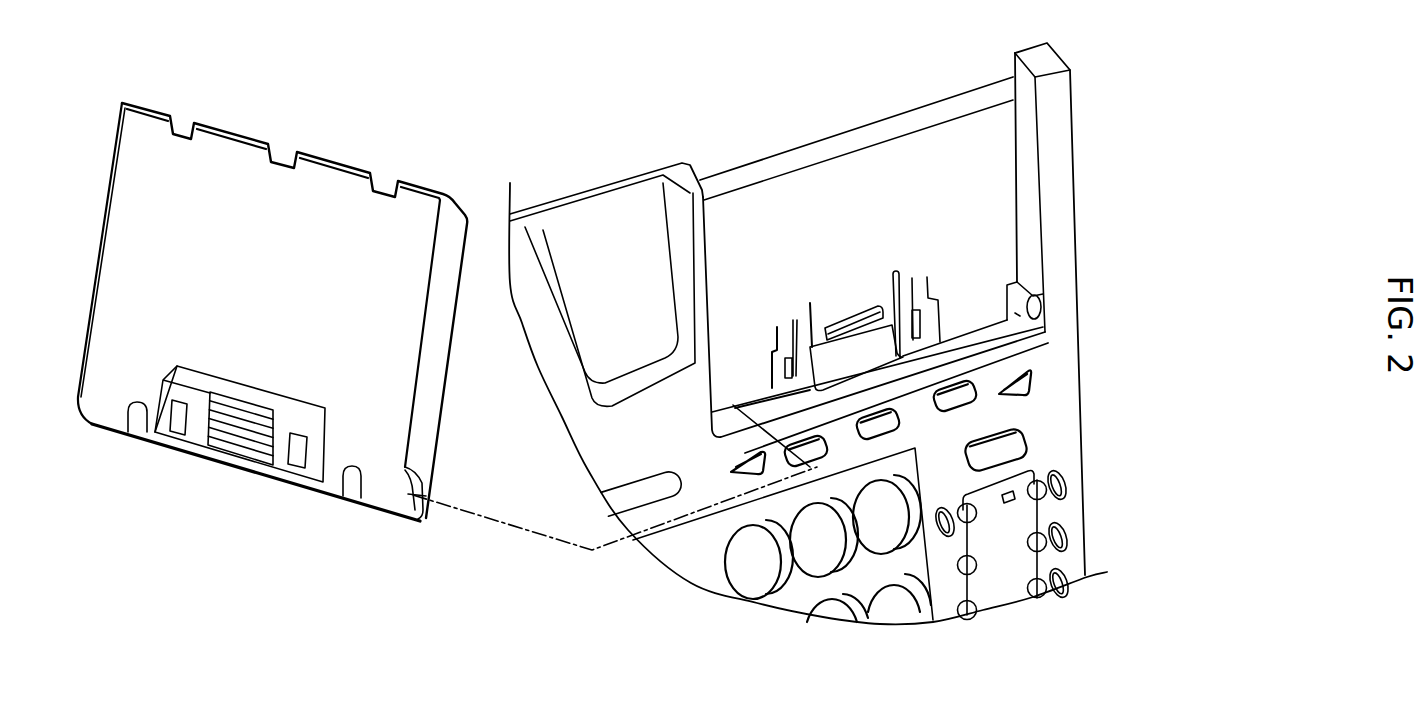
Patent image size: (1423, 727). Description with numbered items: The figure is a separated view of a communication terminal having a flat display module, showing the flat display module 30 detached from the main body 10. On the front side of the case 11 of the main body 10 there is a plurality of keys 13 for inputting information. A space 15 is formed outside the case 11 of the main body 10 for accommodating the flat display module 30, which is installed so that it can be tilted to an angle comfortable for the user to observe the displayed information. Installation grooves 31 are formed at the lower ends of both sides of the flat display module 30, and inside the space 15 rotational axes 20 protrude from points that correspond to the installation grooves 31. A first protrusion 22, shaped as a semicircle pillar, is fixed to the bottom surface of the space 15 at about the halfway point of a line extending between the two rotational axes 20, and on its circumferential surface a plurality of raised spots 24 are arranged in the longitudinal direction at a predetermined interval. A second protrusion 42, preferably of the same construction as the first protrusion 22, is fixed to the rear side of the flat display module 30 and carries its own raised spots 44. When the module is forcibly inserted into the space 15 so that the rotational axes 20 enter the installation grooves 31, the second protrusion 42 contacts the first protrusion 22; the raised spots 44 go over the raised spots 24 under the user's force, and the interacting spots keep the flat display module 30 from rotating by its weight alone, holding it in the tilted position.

The main body 10 is at (1057, 178).
The case 11 is at (1063, 438).
The keys 13 is at (751, 563).
The space 15 is at (774, 228).
The rotational axes 20 is at (1040, 300).
The first protrusion 22 is at (876, 306).
The raised spots 24 is at (853, 312).
The flat display module 30 is at (284, 128).
The installation grooves 31 is at (423, 518).
The second protrusion 42 is at (267, 469).
The raised spots 44 is at (237, 430).